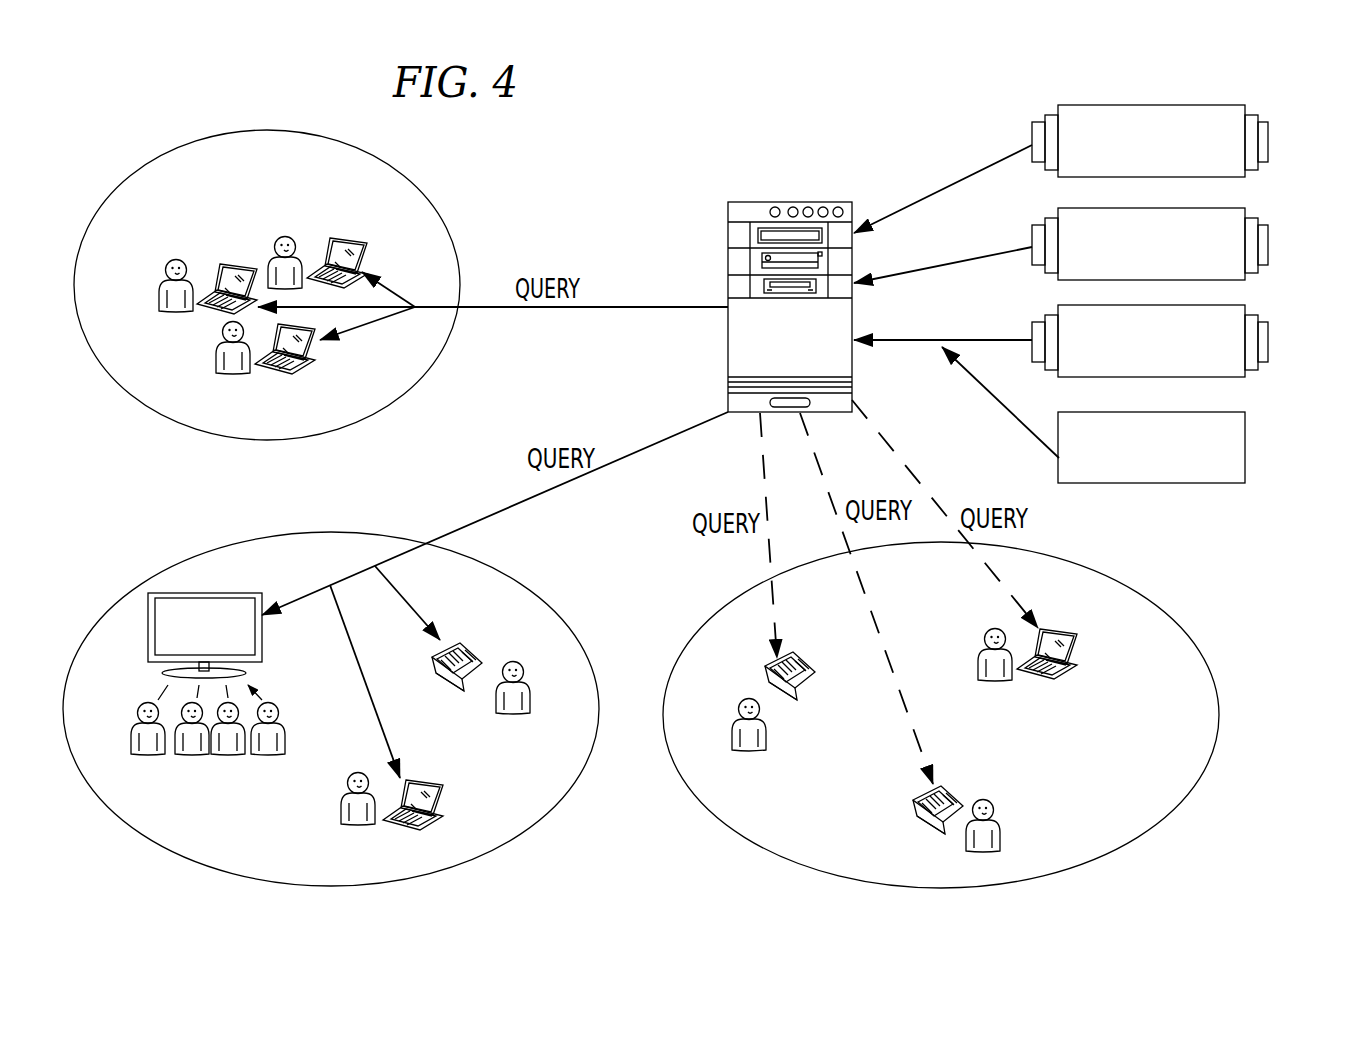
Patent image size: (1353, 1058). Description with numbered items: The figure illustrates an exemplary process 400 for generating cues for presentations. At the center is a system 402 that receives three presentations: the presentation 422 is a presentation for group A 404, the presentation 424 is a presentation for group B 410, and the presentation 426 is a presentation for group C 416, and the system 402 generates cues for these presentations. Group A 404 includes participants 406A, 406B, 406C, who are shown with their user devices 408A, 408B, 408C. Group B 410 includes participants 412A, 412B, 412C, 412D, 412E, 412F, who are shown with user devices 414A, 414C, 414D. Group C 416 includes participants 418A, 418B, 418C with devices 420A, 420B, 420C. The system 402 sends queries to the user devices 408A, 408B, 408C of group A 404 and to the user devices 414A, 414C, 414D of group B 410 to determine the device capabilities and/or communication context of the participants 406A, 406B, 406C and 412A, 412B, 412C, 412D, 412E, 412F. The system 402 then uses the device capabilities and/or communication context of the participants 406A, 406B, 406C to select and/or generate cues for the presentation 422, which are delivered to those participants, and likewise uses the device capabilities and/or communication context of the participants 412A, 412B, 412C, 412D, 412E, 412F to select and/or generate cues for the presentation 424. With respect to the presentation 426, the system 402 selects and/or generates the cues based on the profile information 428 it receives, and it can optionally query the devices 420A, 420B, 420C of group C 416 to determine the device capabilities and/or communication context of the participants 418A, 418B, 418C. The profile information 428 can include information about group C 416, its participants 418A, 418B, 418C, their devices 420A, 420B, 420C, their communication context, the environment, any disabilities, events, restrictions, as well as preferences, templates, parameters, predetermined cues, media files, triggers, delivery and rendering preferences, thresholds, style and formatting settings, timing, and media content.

The process 400 is at (628, 160).
The system 402 is at (753, 202).
The group A 404 is at (165, 156).
The participant 406A is at (300, 238).
The participant 406B is at (159, 290).
The participant 406C is at (215, 356).
The user device 408A is at (366, 257).
The user device 408B is at (220, 268).
The user device 408C is at (270, 367).
The group B 410 is at (130, 588).
The participant 412A is at (508, 713).
The participant 412B is at (131, 735).
The participant 412C is at (192, 755).
The participant 412D is at (228, 755).
The participant 412E is at (285, 735).
The participant 412F is at (341, 810).
The user device 414A is at (470, 655).
The user device 414C is at (155, 617).
The user device 414D is at (384, 822).
The group C 416 is at (1189, 637).
The participant 418A is at (985, 633).
The participant 418B is at (1015, 780).
The participant 418C is at (744, 703).
The user device 420A is at (1073, 650).
The user device 420B is at (830, 650).
The user device 420C is at (915, 818).
The presentation 422 is at (1268, 133).
The presentation 424 is at (1268, 238).
The presentation 426 is at (1268, 333).
The profile information 428 is at (1245, 447).